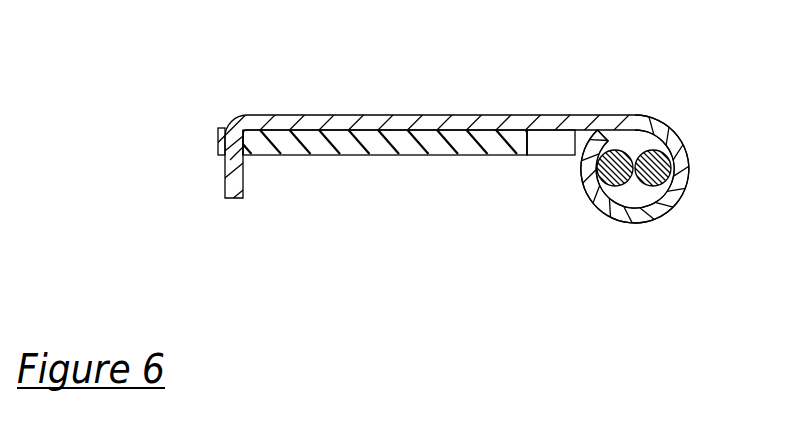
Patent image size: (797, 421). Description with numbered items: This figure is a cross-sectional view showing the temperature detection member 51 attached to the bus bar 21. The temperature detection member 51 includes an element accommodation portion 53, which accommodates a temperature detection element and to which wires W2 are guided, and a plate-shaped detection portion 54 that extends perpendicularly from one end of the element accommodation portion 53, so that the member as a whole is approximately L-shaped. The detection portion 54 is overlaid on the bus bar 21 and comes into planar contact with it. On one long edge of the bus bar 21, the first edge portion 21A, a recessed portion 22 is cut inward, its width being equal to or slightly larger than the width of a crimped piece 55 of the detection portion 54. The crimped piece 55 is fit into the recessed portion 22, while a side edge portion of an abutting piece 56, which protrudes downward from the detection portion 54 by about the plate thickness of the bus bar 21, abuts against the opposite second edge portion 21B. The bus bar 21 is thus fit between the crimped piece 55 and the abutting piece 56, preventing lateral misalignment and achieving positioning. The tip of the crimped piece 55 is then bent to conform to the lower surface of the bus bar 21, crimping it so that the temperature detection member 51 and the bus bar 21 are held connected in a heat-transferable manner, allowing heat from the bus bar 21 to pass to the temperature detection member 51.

The bus bar 21 is at (375, 157).
The first edge portion 21A is at (218, 141).
The second edge portion 21B is at (543, 128).
The recessed portion 22 is at (230, 130).
The temperature detection member 51 is at (455, 128).
The element accommodation portion 53 is at (685, 165).
The detection portion 54 is at (400, 125).
The crimped piece 55 is at (230, 173).
The abutting piece 56 is at (553, 155).
The wires W2 is at (650, 184).